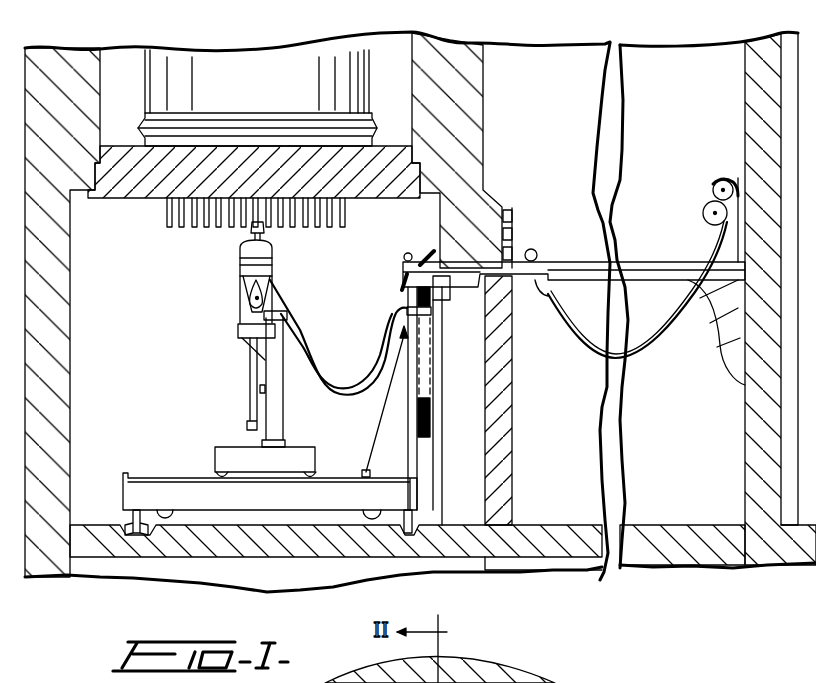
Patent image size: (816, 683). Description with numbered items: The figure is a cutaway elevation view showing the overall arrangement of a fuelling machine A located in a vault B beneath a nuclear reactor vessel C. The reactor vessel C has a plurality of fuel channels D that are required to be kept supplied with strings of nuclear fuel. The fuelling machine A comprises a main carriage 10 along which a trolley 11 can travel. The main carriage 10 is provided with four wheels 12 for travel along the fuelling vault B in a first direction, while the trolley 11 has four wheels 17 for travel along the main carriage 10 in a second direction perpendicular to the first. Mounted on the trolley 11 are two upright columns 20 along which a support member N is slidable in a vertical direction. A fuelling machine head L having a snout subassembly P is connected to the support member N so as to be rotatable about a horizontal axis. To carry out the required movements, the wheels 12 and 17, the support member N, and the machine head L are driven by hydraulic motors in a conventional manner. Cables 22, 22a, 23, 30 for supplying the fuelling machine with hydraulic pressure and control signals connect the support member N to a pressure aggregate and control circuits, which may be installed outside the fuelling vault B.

The fuelling machine A is at (235, 288).
The vault B is at (359, 212).
The nuclear reactor vessel C is at (182, 57).
The fuel channels D is at (168, 222).
The snout subassembly P is at (249, 237).
The fuelling machine head L is at (284, 240).
The support member N is at (247, 340).
The main carriage 10 is at (160, 483).
The trolley 11 is at (230, 448).
The wheels 12 is at (132, 517).
The wheels 17 is at (228, 470).
The upright columns 20 is at (280, 432).
The cable 22 is at (313, 380).
The cable 22a is at (330, 380).
The cable 23 is at (428, 334).
The cable 30 is at (583, 347).